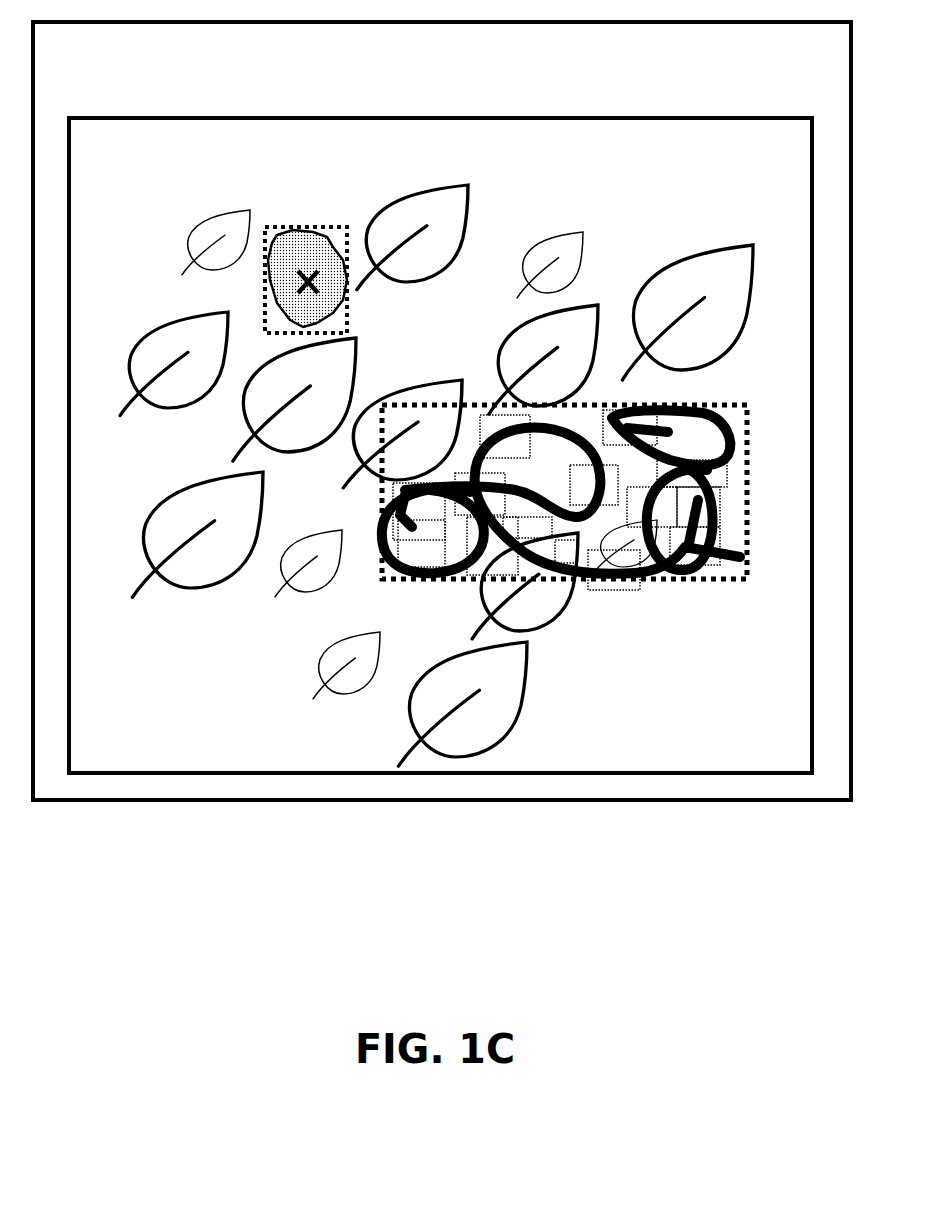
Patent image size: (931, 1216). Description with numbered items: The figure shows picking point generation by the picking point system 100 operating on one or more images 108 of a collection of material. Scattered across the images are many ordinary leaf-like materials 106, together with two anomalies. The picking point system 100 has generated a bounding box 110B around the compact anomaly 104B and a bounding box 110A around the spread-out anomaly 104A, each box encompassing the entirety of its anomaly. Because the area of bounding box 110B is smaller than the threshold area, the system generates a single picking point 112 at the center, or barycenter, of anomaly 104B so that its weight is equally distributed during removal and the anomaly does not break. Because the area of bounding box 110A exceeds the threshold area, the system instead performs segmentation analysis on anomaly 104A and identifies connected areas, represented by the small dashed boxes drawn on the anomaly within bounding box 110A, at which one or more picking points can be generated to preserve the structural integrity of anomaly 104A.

The picking point system 100 is at (585, 84).
The one or more images 108 is at (568, 164).
The one or more materials 106 is at (217, 349).
The anomaly 104A is at (673, 567).
The anomaly 104B is at (315, 240).
The bounding box 110A is at (750, 422).
The bounding box 110B is at (333, 227).
The picking point 112 is at (304, 282).